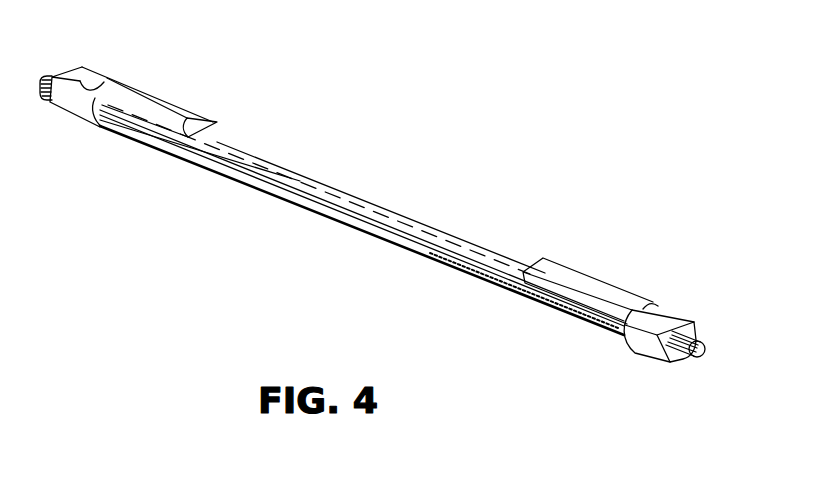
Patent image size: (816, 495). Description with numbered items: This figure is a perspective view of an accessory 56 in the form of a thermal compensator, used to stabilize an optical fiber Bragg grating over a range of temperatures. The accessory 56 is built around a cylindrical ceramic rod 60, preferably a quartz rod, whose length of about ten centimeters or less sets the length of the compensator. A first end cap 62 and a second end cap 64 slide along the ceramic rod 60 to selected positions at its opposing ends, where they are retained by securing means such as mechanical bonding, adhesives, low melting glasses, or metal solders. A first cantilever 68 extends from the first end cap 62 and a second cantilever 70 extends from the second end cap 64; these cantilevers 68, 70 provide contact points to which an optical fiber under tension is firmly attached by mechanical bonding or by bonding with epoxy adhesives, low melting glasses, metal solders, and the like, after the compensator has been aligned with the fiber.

The accessory 56 is at (622, 217).
The ceramic rod 60 is at (420, 244).
The first end cap 62 is at (626, 346).
The second end cap 64 is at (118, 90).
The first cantilever 68 is at (590, 290).
The second cantilever 70 is at (152, 110).